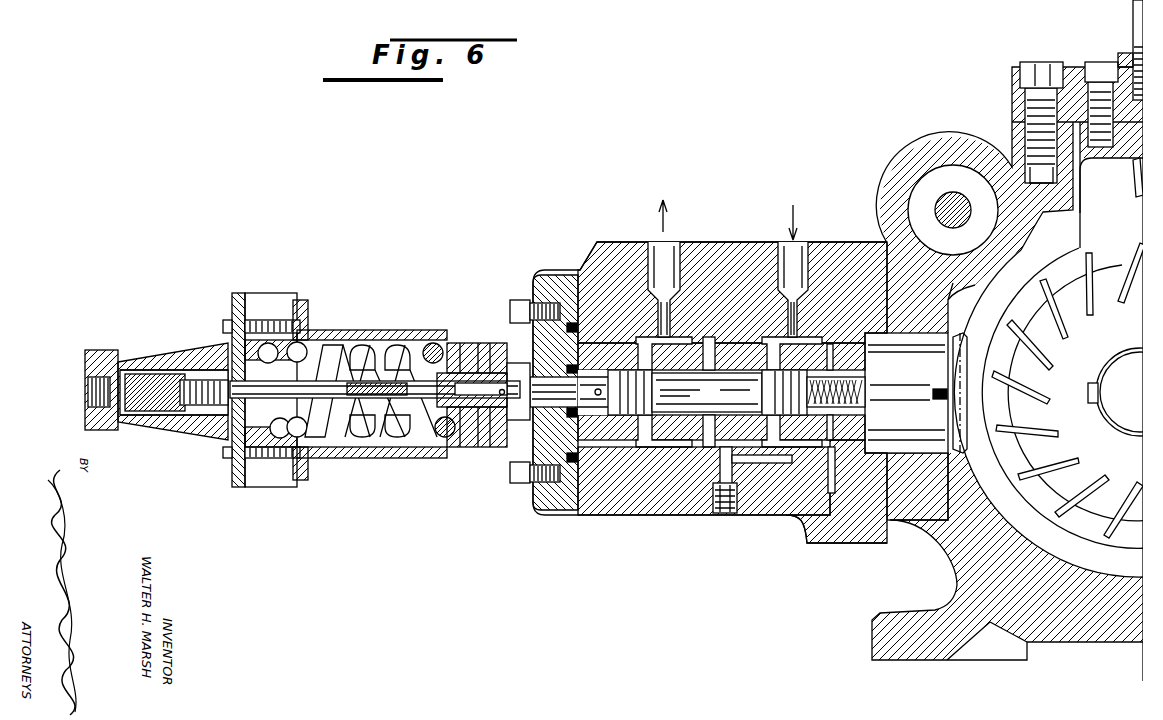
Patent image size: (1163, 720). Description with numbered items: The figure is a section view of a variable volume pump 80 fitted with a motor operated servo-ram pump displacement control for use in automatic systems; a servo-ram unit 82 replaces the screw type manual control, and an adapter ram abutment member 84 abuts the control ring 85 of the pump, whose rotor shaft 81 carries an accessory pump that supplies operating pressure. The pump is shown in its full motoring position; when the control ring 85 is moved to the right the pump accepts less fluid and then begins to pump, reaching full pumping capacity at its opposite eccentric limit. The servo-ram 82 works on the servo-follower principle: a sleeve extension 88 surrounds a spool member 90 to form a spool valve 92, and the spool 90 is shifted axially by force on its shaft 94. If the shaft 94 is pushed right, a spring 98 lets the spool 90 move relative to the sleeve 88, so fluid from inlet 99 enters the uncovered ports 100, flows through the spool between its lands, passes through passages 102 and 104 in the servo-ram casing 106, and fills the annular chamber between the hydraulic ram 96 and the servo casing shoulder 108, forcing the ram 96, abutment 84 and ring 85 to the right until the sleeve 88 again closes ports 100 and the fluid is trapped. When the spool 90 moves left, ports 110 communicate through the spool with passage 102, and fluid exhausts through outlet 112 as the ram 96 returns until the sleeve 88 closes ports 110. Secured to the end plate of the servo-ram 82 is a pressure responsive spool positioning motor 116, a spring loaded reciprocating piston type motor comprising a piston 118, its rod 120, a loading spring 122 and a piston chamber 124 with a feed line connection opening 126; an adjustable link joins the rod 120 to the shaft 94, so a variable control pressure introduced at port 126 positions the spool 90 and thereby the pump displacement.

The variable volume pump 80 is at (881, 149).
The variable pump rotor shaft 81 is at (1120, 420).
The servo-ram unit 82 is at (740, 234).
The adapter ram abutment member 84 is at (912, 450).
The control ring 85 is at (1008, 512).
The sleeve extension 88 is at (733, 352).
The spool member 90 is at (672, 380).
The spool valve 92 is at (665, 440).
The shaft 94 is at (550, 380).
The hydraulic ram 96 is at (836, 491).
The spring 98 is at (838, 410).
The inlet 99 is at (806, 245).
The ports 100 is at (777, 357).
The passage 102 is at (720, 470).
The passage 104 is at (778, 466).
The servo-ram casing 106 is at (691, 512).
The servo casing shoulder 108 is at (831, 478).
The ports 110 is at (640, 358).
The outlet 112 is at (650, 268).
The pressure responsive spool positioning motor 116 is at (353, 318).
The piston 118 is at (165, 378).
The rod 120 is at (347, 428).
The loading spring 122 is at (400, 342).
The piston chamber 124 is at (133, 368).
The feed line connection opening 126 is at (86, 397).